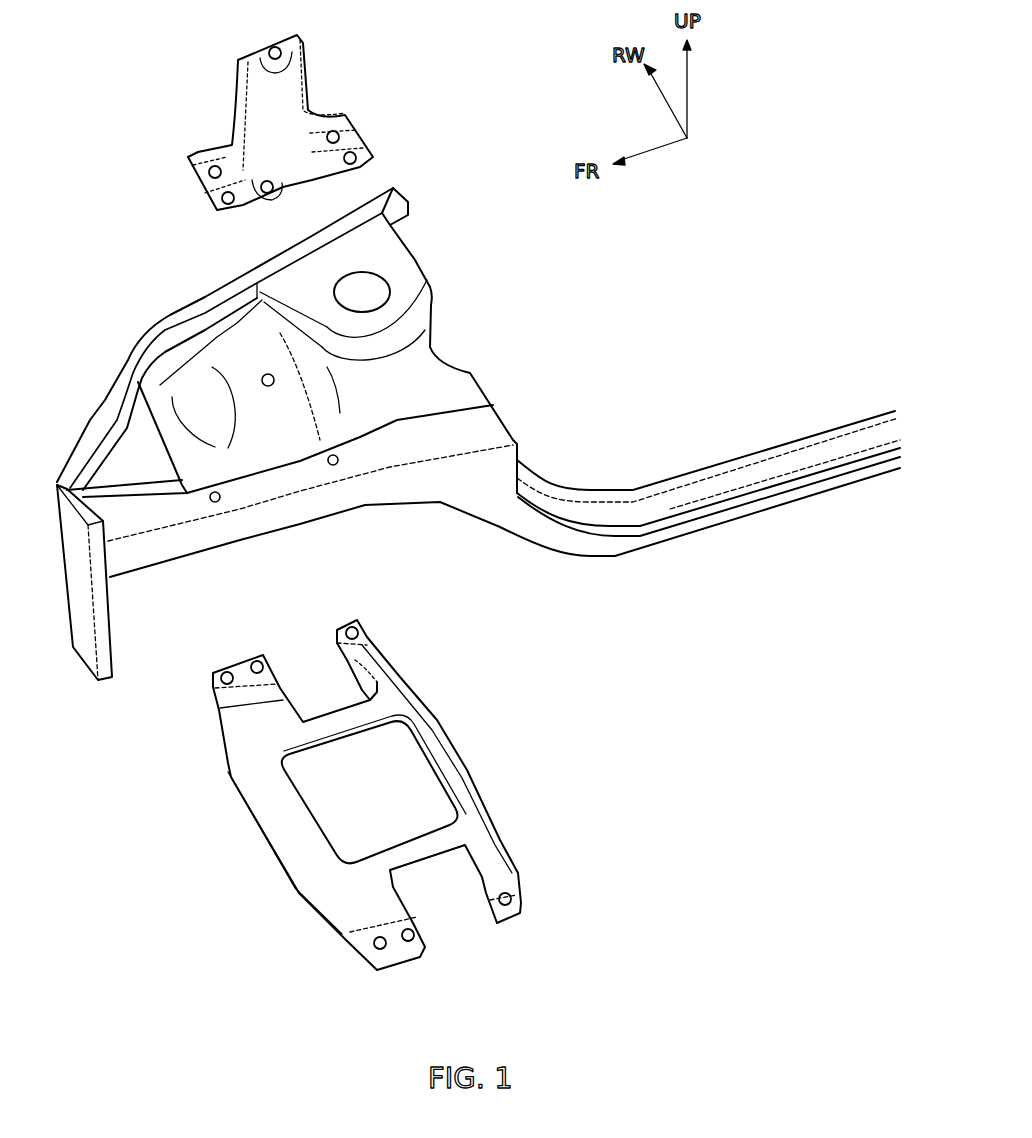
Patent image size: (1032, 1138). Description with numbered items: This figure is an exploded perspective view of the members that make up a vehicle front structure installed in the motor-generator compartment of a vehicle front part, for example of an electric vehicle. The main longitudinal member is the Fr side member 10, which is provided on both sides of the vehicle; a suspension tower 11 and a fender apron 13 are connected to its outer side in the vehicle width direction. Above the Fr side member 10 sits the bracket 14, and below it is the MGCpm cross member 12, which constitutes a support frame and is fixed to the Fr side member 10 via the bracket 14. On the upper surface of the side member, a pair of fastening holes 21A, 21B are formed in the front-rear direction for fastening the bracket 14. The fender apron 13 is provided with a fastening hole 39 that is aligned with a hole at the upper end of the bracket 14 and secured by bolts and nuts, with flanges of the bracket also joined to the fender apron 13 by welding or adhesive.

The Fr side member 10 is at (163, 563).
The suspension tower 11 is at (407, 278).
The MGCpm cross member 12 is at (464, 757).
The fender apron 13 is at (190, 390).
The bracket 14 is at (233, 115).
The fastening hole 21A is at (223, 490).
The fastening hole 21B is at (355, 448).
The fastening hole 39 is at (266, 372).